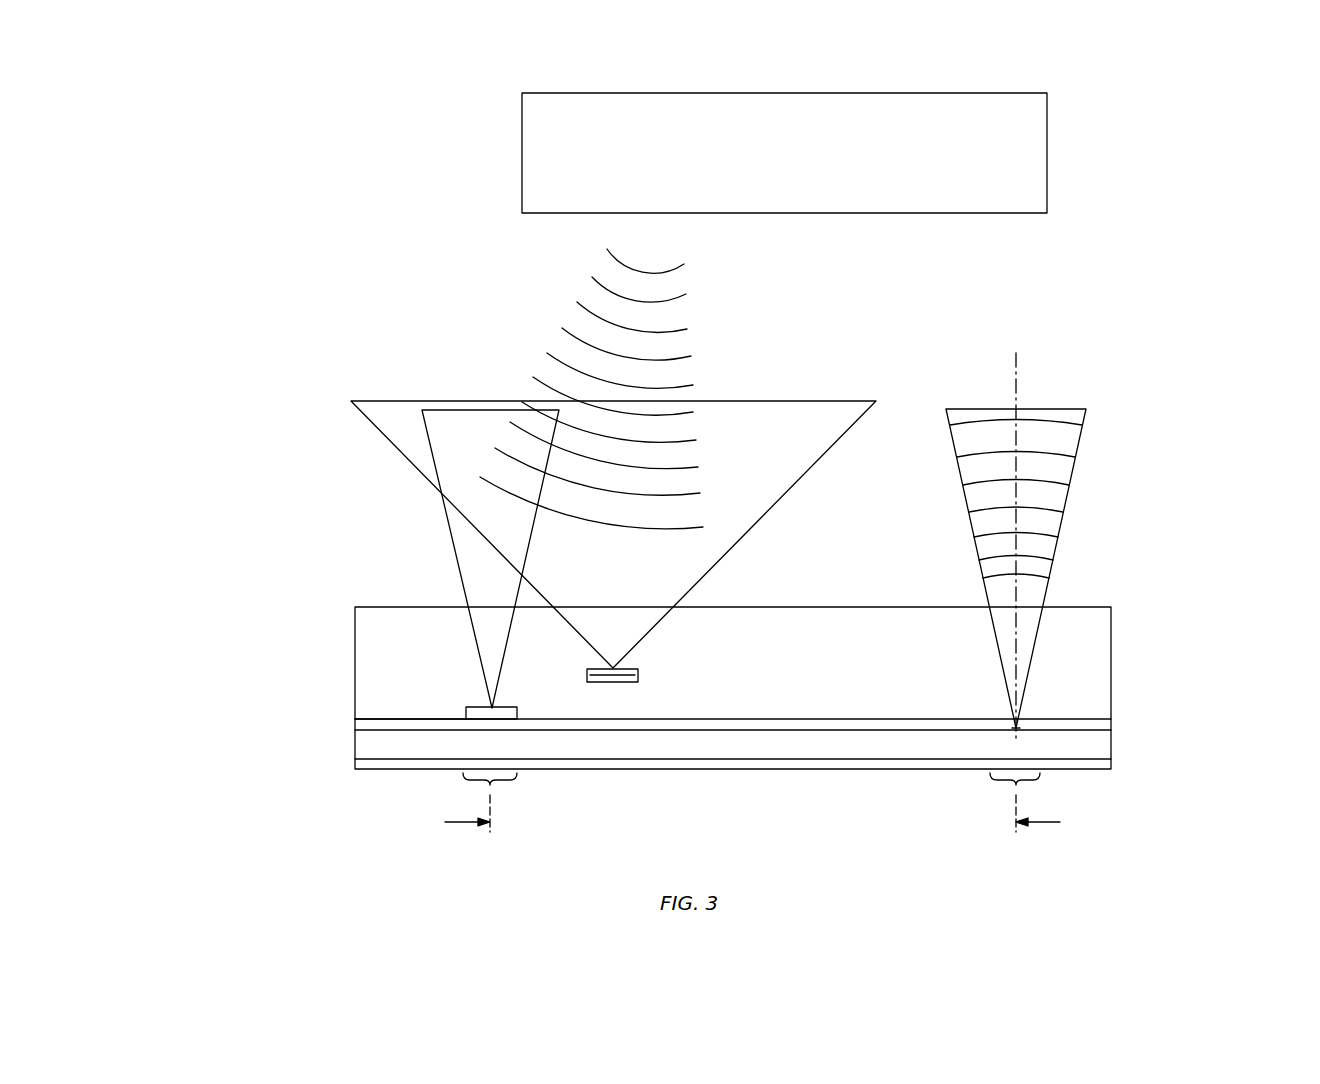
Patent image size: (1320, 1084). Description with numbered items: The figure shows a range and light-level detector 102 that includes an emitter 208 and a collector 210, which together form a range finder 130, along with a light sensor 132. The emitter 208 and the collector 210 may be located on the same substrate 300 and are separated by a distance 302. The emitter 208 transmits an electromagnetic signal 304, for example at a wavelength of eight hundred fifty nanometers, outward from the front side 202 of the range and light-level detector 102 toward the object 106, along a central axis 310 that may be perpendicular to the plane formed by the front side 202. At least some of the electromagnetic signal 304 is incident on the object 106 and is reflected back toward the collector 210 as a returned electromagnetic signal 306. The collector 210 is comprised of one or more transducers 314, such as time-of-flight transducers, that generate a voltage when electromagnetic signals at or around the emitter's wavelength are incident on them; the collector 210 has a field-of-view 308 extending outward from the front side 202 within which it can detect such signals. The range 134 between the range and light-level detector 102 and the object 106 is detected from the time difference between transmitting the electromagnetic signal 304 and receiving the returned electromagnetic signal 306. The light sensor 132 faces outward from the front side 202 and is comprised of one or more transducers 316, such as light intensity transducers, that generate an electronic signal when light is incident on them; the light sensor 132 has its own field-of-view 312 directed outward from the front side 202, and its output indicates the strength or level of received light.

The range and light-level detector 102 is at (1155, 203).
The object 106 is at (1032, 148).
The range finder 130 is at (488, 795).
The light sensor 132 is at (613, 673).
The range 134 is at (327, 211).
The front side 202 is at (1080, 606).
The emitter 208 is at (1018, 728).
The collector 210 is at (492, 712).
The substrate 300 is at (1098, 762).
The distance 302 is at (1047, 823).
The electromagnetic signal 304 is at (1068, 500).
The returned electromagnetic signal 306 is at (678, 330).
The field-of-view 308 is at (455, 563).
The central axis 310 is at (1017, 379).
The field-of-view 312 is at (795, 413).
The transducers 314 is at (466, 713).
The transducers 316 is at (608, 675).